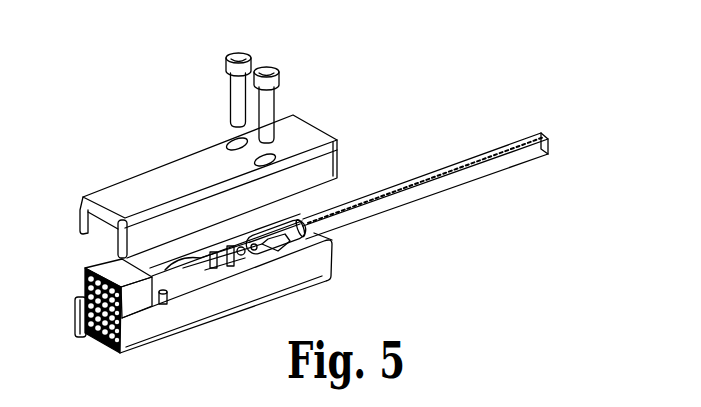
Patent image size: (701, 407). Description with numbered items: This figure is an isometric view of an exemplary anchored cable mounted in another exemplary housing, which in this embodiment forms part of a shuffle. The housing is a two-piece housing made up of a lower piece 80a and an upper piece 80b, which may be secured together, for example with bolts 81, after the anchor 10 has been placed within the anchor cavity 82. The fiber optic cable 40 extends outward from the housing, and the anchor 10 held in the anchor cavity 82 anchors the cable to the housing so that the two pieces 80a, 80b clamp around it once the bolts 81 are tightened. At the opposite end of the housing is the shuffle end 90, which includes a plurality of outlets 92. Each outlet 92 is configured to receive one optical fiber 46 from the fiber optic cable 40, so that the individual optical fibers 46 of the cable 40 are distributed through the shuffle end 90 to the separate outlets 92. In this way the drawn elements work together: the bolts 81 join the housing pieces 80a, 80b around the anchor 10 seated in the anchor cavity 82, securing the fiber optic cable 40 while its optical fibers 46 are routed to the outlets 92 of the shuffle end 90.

The anchor 10 is at (283, 245).
The fiber optic cable 40 is at (400, 176).
The optical fiber 46 is at (206, 266).
The housing piece 80a is at (334, 263).
The housing piece 80b is at (143, 174).
The bolts 81 is at (278, 67).
The anchor cavity 82 is at (320, 232).
The shuffle end 90 is at (131, 301).
The outlets 92 is at (96, 339).